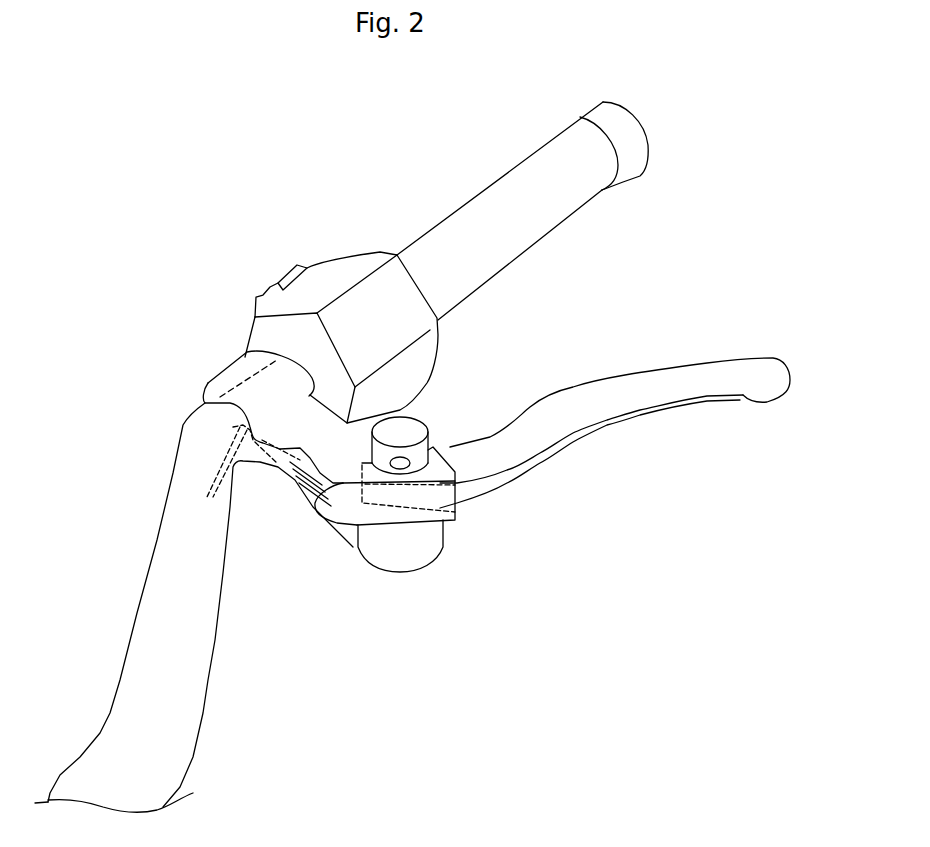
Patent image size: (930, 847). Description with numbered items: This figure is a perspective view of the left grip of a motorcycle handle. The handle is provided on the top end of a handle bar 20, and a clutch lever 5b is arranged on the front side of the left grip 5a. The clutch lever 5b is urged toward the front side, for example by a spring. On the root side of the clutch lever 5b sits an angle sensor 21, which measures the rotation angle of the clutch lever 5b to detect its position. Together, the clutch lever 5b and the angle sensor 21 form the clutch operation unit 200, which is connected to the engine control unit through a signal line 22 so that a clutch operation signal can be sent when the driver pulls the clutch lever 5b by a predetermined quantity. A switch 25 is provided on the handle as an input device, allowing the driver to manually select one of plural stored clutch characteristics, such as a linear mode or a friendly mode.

The left grip 5a is at (493, 197).
The clutch lever 5b is at (608, 403).
The handle bar 20 is at (200, 673).
The angle sensor 21 is at (422, 560).
The signal line 22 is at (263, 465).
The switch 25 is at (293, 265).
The clutch operation unit 200 is at (565, 525).